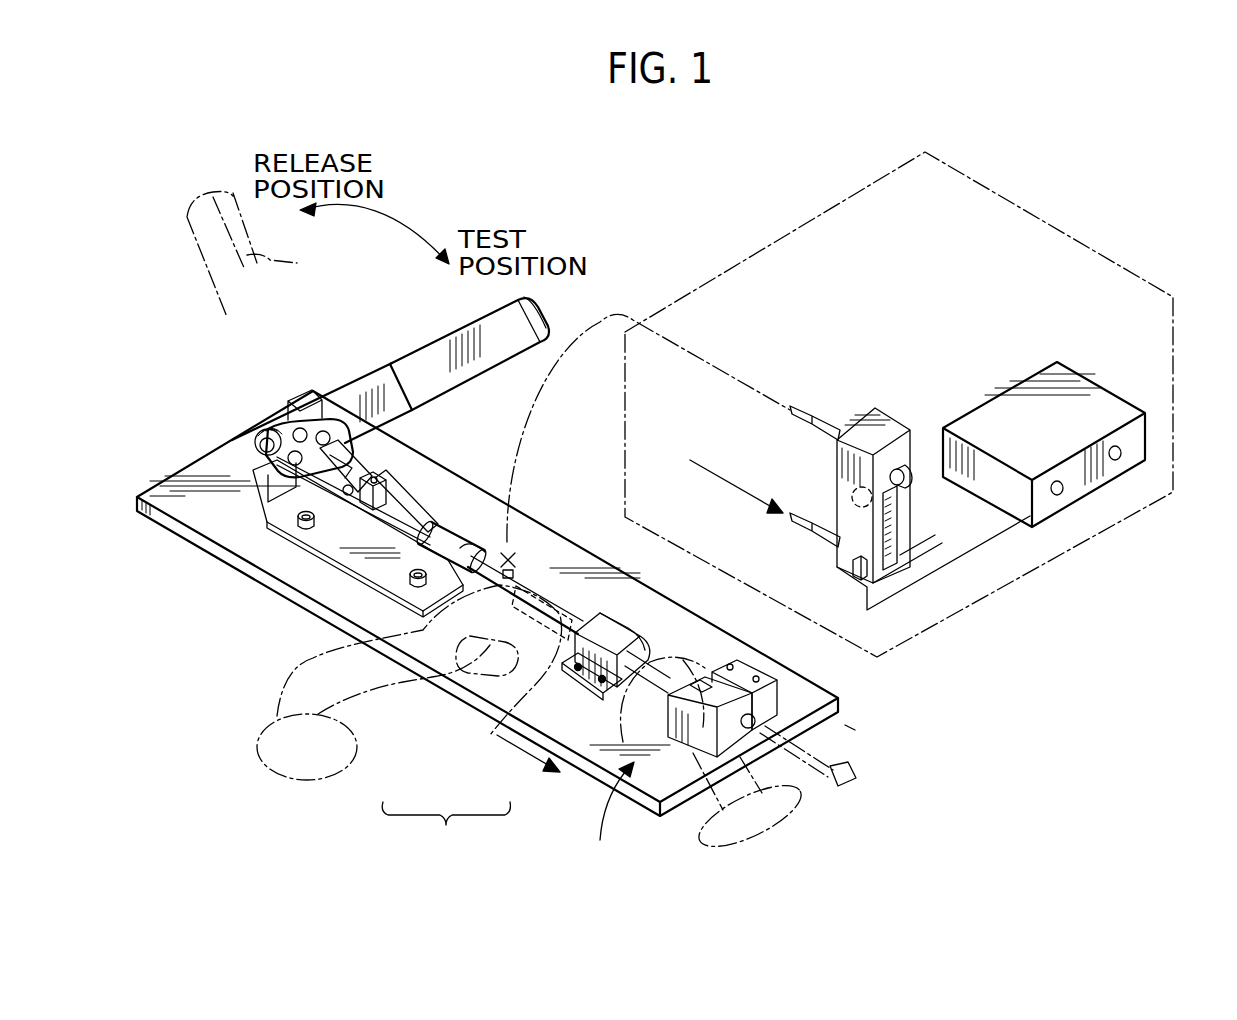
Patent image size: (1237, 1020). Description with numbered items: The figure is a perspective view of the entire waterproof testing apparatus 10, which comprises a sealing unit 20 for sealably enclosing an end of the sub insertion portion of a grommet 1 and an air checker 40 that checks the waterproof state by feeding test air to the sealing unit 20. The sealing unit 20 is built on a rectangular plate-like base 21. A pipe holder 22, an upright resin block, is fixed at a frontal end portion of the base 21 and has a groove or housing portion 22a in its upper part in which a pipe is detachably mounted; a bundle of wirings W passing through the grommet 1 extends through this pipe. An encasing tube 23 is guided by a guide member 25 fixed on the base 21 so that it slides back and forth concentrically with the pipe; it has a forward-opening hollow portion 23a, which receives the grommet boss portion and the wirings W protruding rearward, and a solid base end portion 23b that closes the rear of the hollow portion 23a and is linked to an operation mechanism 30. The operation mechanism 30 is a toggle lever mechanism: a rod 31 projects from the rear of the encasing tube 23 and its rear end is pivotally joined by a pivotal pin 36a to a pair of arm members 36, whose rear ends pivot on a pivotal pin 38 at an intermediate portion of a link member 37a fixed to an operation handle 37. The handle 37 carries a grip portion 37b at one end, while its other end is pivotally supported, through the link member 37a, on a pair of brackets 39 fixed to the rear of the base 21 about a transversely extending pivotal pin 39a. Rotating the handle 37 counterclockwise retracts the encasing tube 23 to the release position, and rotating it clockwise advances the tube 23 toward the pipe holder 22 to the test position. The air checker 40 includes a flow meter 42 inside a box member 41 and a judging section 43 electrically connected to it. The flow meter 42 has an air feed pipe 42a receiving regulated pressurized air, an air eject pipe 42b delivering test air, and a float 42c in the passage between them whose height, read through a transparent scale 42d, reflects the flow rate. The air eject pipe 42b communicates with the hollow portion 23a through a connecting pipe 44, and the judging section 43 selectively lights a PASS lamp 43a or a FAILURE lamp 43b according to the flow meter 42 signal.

The grommet 1 is at (609, 815).
The testing apparatus 10 is at (1010, 667).
The sealing unit 20 is at (858, 717).
The base 21 is at (263, 573).
The pipe holder 22 is at (770, 703).
The groove (housing portion) 22a is at (735, 685).
The encasing tube 23 is at (446, 831).
The hollow portion 23a is at (552, 625).
The base end portion 23b is at (473, 572).
The guide member 25 is at (613, 627).
The operation mechanism 30 is at (264, 400).
The rod 31 is at (397, 520).
The arm members 36 is at (367, 458).
The pivotal pin 36a is at (358, 497).
The operation handle 37 is at (372, 398).
The link member 37a is at (293, 470).
The grip portion 37b is at (463, 350).
The pivotal pin 38 is at (293, 398).
The brackets 39 is at (257, 450).
The pivotal pin 39a is at (263, 436).
The air checker 40 is at (930, 645).
The box member 41 is at (1035, 235).
The flow meter 42 is at (878, 428).
The air feed pipe 42a is at (818, 538).
The air eject pipe 42b is at (800, 418).
The float 42c is at (855, 488).
The transparent scale 42d is at (893, 517).
The judging section 43 is at (1043, 398).
The PASS lamp 43a is at (1063, 493).
The FAILURE lamp 43b is at (1120, 458).
The connecting pipe 44 is at (582, 350).
The bundle of wirings W is at (823, 760).